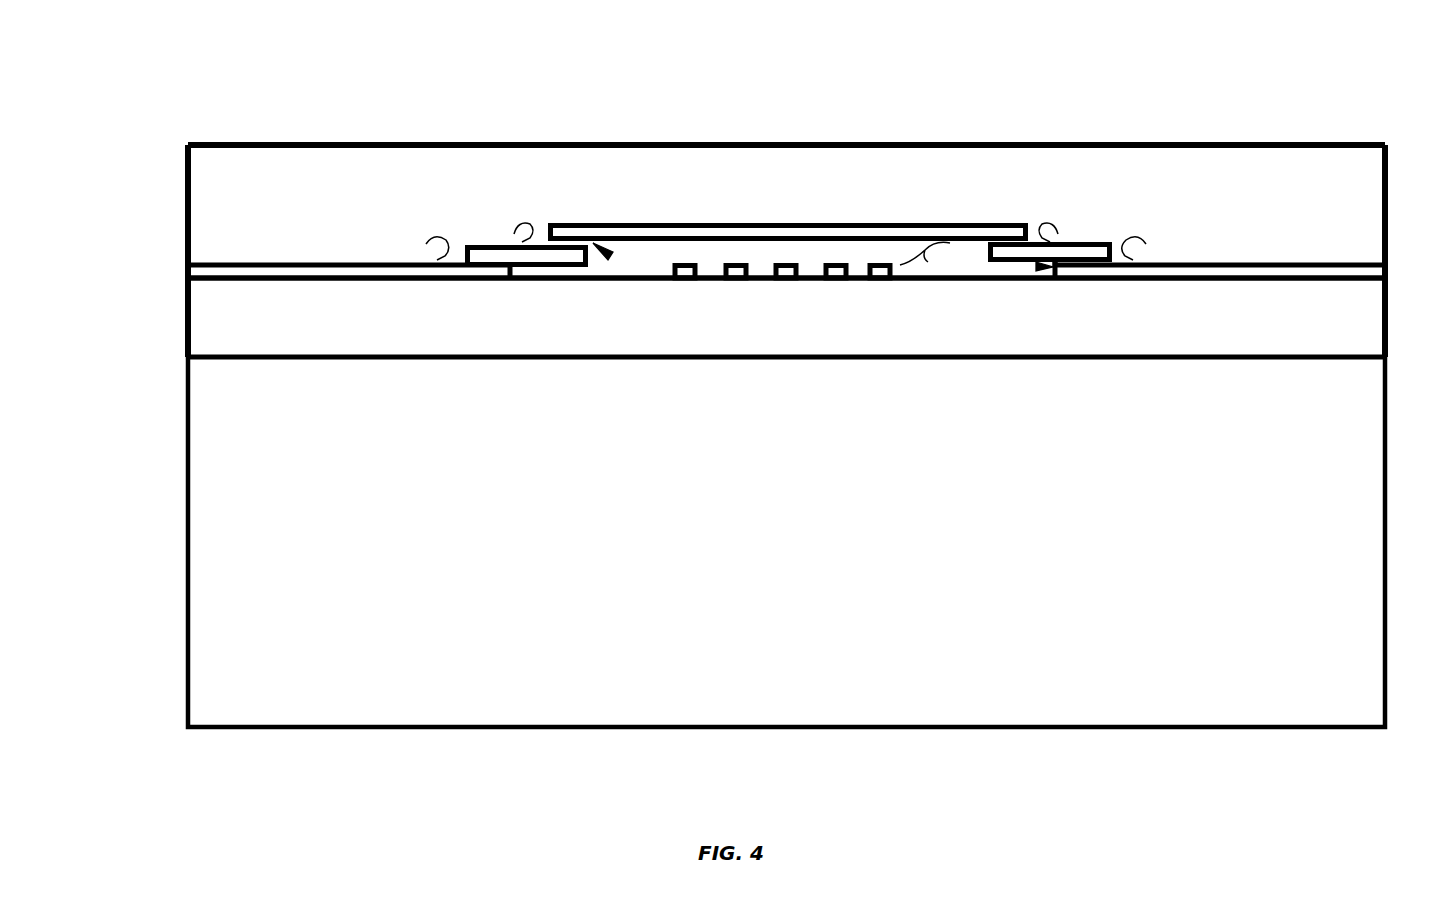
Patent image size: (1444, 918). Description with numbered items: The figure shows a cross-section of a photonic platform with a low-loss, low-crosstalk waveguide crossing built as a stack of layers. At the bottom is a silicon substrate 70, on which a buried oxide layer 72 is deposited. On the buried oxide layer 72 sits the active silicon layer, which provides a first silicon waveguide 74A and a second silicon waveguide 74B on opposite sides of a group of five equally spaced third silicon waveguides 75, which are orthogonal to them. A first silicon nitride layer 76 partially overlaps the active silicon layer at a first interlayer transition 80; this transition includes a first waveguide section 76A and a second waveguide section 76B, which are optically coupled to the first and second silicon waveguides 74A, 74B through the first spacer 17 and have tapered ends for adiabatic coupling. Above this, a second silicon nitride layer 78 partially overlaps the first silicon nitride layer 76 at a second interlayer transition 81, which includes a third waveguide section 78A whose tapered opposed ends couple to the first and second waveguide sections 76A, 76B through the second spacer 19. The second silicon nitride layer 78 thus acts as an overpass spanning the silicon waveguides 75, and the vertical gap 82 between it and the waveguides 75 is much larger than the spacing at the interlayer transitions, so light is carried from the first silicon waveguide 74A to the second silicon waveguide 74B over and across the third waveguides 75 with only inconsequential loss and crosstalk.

The silicon substrate 70 is at (1010, 655).
The buried oxide layer 72 is at (1340, 327).
The first silicon waveguide 74A is at (413, 262).
The second silicon waveguide 74B is at (1170, 262).
The silicon waveguides 75 is at (890, 263).
The first silicon nitride layer 76 is at (791, 165).
The first waveguide section 76A is at (475, 244).
The second waveguide section 76B is at (1113, 244).
The second silicon nitride layer 78 is at (813, 127).
The third waveguide section 78A is at (550, 223).
The first interlayer transition 80 is at (433, 240).
The second interlayer transition 81 is at (518, 226).
The vertical gap 82 is at (950, 243).
The second spacer 19 is at (610, 252).
The first spacer 17 is at (1038, 266).